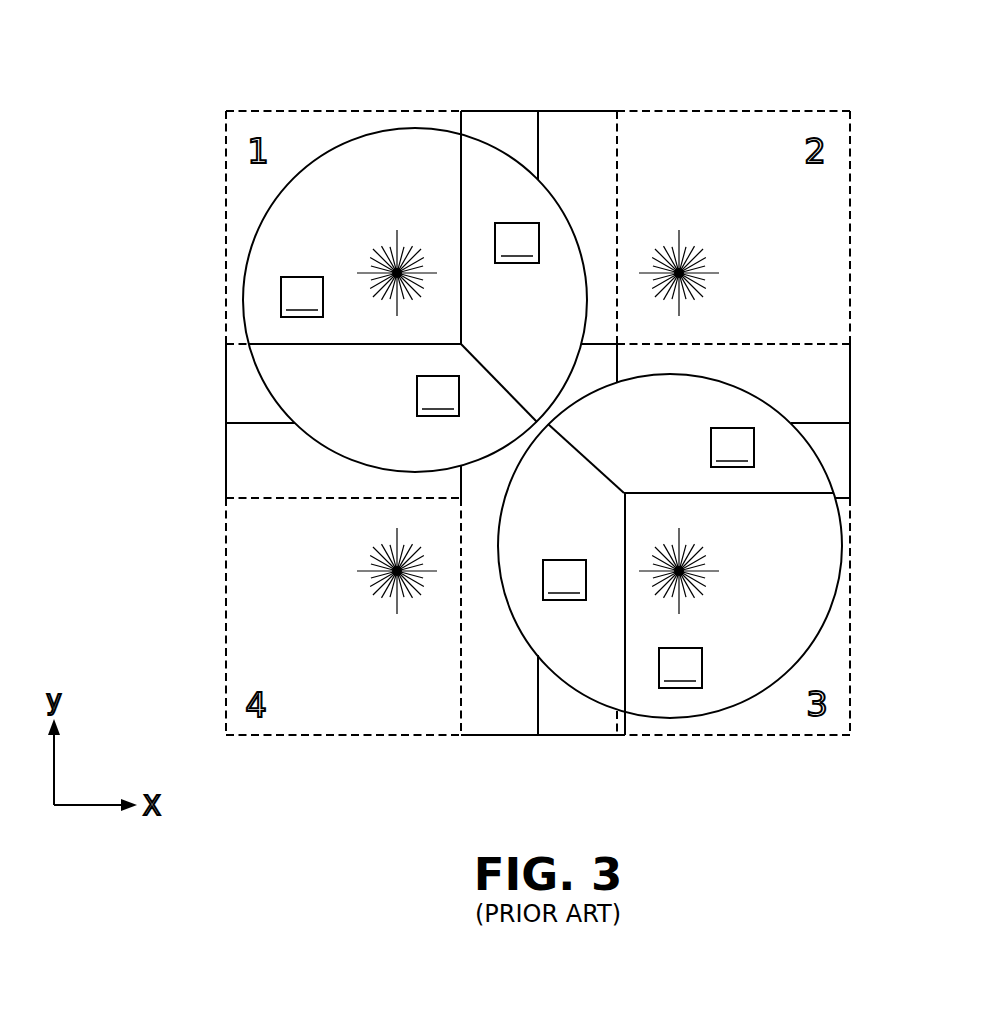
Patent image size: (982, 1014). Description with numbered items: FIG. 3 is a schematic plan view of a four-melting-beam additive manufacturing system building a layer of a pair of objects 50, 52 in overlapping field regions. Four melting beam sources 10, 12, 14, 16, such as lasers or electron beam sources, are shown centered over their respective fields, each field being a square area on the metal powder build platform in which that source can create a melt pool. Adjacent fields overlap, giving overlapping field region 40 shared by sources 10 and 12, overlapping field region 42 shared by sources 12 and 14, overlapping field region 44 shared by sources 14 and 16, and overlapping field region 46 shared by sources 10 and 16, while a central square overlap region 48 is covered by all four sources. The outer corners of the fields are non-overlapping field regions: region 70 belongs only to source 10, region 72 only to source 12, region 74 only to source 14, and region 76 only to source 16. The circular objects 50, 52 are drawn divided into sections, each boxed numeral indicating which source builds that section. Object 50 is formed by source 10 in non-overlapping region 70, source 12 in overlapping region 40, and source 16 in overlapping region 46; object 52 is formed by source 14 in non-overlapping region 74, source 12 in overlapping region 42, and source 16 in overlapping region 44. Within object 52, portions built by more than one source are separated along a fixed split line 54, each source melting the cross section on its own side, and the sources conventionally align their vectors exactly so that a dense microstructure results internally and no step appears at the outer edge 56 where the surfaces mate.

The melting beam source 10 is at (378, 258).
The melting beam source 12 is at (695, 272).
The melting beam source 14 is at (687, 587).
The melting beam source 16 is at (385, 564).
The overlapping field region 40 is at (578, 90).
The overlapping field region 42 is at (880, 390).
The overlapping field region 44 is at (575, 760).
The overlapping field region 46 is at (195, 465).
The overlap region 48 is at (487, 470).
The object 50 is at (236, 385).
The object 52 is at (806, 669).
The line 54 is at (797, 494).
The edge 56 is at (633, 718).
The non-overlapping field region 70 is at (288, 128).
The non-overlapping field region 72 is at (827, 212).
The non-overlapping field region 74 is at (758, 708).
The non-overlapping field region 76 is at (254, 641).